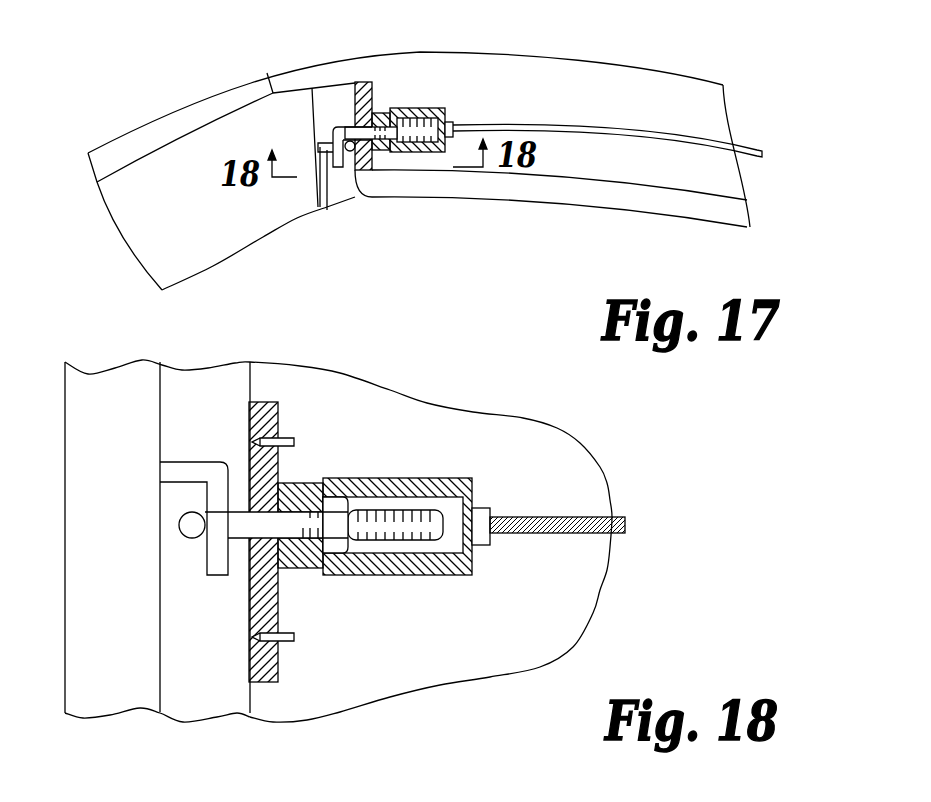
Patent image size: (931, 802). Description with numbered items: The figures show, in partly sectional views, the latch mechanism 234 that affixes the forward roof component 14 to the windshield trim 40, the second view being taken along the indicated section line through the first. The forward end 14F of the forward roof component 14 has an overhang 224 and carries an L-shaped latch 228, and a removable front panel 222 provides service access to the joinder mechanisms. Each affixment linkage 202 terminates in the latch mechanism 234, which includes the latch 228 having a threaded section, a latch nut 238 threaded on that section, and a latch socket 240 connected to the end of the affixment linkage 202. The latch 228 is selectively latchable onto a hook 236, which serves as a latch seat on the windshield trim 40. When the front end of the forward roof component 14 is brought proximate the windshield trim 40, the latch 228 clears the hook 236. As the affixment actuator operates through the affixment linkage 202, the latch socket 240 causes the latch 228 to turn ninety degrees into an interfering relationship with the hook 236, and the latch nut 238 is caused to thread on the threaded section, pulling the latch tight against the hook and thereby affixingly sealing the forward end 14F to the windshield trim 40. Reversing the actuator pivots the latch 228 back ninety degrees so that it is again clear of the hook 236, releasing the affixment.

In FIG. 17, the forward roof component 14 is at (540, 57).
In FIG. 17, the overhang 224 is at (338, 58).
In FIG. 17, the latch 228 is at (350, 82).
In FIG. 18, the latch 228 is at (187, 538).
In FIG. 17, the hook 236 is at (325, 210).
In FIG. 18, the hook 236 is at (193, 462).
In FIG. 17, the windshield trim 40 is at (355, 203).
In FIG. 18, the windshield trim 40 is at (187, 387).
In FIG. 18, the forward end 14F is at (249, 378).
In FIG. 18, the removable front panel 222 is at (250, 613).
In FIG. 18, the latch mechanism 234 is at (382, 430).
In FIG. 18, the latch nut 238 is at (337, 498).
In FIG. 18, the latch socket 240 is at (403, 478).
In FIG. 18, the affixment linkage 202 is at (583, 503).